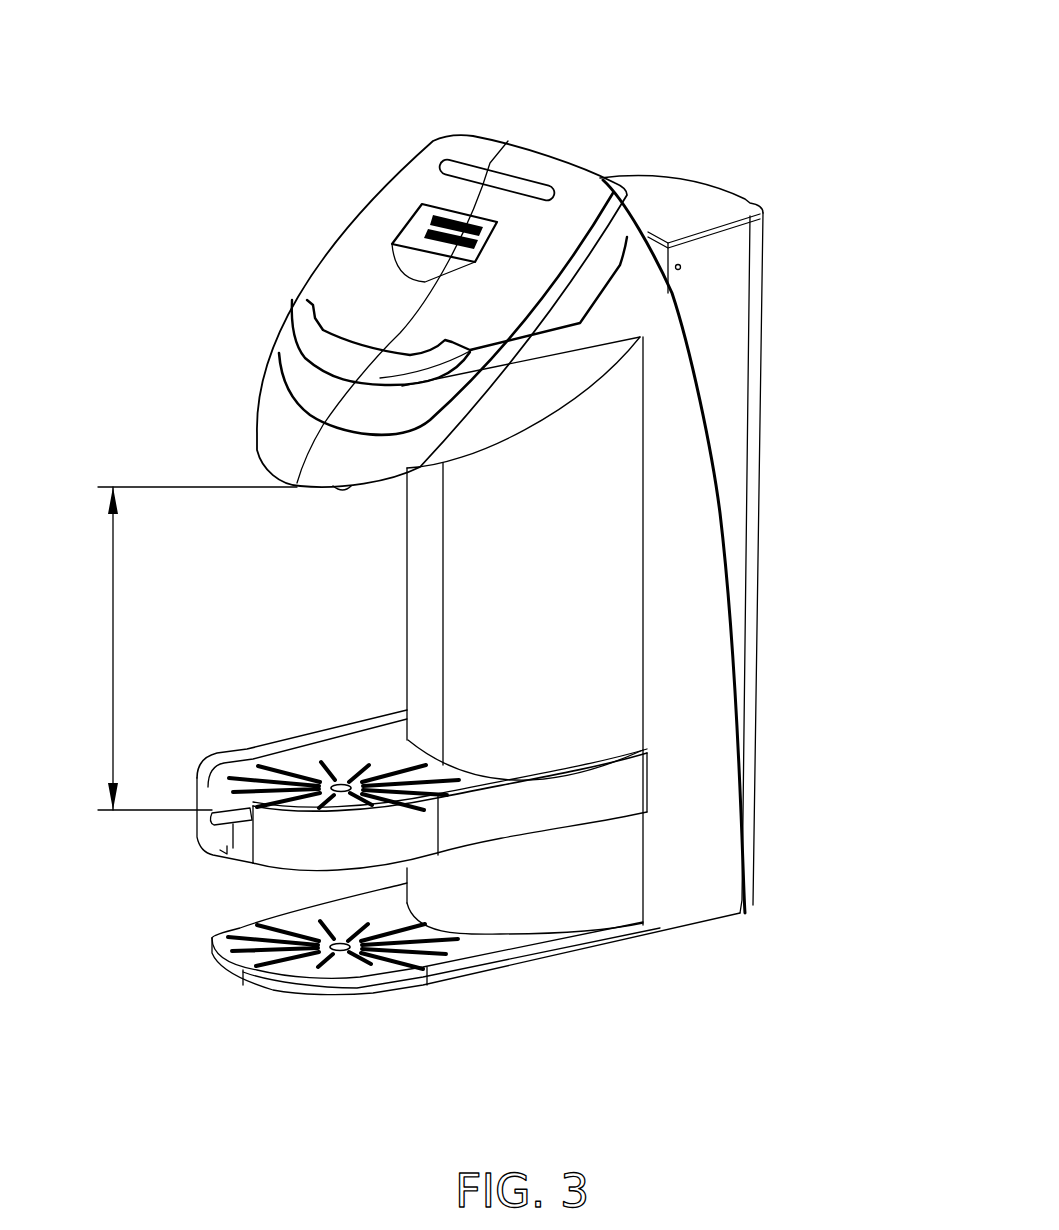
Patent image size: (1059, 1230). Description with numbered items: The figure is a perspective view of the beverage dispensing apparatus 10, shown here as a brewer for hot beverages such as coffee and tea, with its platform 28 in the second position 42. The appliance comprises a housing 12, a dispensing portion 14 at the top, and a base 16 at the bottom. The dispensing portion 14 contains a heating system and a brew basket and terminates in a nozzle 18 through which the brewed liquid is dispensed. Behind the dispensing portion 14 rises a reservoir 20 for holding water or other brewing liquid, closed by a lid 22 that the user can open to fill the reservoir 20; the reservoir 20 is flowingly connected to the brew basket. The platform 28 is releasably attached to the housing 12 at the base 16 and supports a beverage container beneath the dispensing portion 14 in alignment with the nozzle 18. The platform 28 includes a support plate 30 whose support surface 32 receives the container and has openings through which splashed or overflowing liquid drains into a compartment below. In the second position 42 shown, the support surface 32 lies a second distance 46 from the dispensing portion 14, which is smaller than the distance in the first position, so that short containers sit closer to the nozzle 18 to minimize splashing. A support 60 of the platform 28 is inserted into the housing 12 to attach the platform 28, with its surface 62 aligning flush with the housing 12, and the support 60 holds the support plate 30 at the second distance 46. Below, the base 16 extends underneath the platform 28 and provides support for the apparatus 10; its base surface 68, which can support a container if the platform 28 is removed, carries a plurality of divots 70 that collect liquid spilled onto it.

The dispensing apparatus 10 is at (448, 537).
The housing 12 is at (615, 527).
The dispensing portion 14 is at (388, 346).
The base 16 is at (476, 971).
The nozzle 18 is at (345, 491).
The reservoir 20 is at (726, 290).
The lid 22 is at (675, 188).
The platform 28 is at (466, 787).
The support plate 30 is at (332, 752).
The support surface 32 is at (278, 767).
The second position 42 is at (208, 853).
The second distance 46 is at (113, 652).
The support 60 is at (623, 898).
The surface of the support 62 is at (610, 842).
The base surface 68 is at (303, 922).
The divots 70 is at (353, 975).